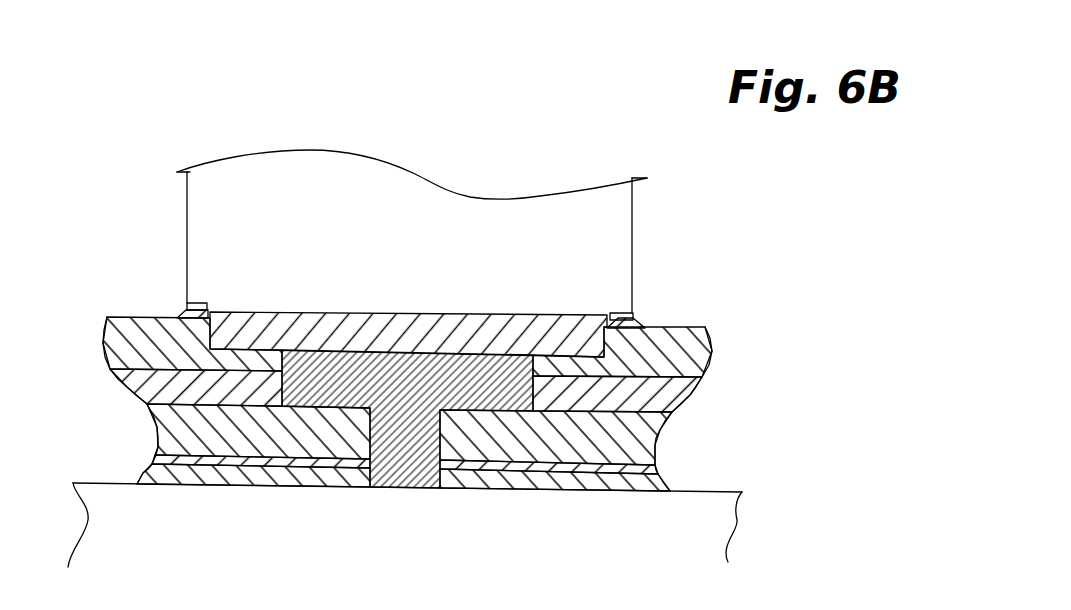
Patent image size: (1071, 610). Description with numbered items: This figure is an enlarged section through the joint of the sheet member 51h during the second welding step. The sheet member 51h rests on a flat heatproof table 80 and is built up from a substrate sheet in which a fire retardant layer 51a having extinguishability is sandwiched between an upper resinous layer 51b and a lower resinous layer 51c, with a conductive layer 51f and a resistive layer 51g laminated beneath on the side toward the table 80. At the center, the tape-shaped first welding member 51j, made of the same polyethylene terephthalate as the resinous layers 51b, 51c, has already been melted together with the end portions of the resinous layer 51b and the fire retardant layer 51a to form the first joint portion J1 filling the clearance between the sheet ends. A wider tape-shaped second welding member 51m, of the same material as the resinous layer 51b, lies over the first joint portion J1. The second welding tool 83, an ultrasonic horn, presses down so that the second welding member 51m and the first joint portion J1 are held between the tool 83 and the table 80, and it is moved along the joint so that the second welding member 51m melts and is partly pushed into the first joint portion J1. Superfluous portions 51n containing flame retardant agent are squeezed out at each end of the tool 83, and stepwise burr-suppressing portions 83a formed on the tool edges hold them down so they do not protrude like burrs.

The second welding tool 83 is at (443, 207).
The burr-suppressing portion 83a is at (193, 305).
The superfluous portion 51n is at (182, 307).
The sheet member 51h is at (680, 319).
The resinous layer 51b is at (683, 355).
The second welding member 51m is at (405, 333).
The first joint portion J1 is at (407, 460).
The first welding member 51j is at (406, 474).
The fire retardant layer 51a is at (665, 397).
The resinous layer 51c is at (633, 440).
The conductive layer 51f is at (643, 470).
The resistive layer 51g is at (570, 482).
The table 80 is at (718, 508).